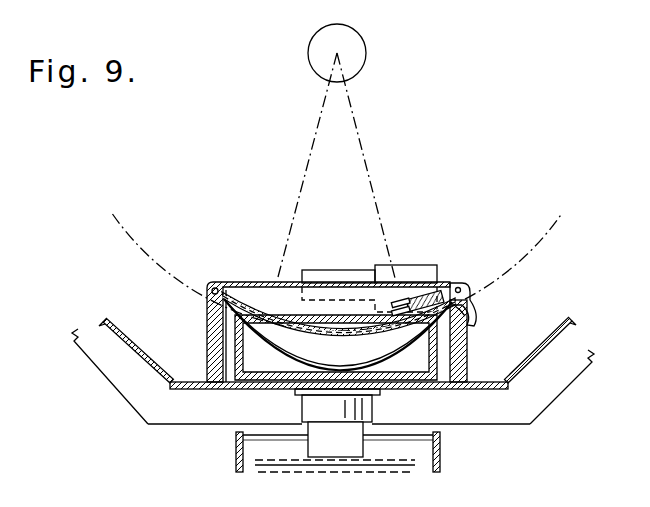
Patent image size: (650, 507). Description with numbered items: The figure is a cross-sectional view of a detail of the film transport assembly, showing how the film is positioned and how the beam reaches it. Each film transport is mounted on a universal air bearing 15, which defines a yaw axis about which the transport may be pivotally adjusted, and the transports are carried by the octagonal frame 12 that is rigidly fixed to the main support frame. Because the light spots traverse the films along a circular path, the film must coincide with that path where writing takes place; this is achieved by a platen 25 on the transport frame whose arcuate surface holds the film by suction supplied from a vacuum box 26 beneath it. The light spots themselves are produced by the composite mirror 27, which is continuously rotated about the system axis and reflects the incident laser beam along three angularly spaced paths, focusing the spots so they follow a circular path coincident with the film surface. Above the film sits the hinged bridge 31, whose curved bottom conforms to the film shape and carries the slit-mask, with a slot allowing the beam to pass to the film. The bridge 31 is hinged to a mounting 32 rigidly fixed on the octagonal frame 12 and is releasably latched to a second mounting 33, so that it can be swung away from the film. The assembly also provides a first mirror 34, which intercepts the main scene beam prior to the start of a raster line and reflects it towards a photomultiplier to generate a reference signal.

The octagonal frame 12 is at (100, 373).
The universal air bearing 15 is at (338, 430).
The platen 25 is at (428, 344).
The vacuum box 26 is at (466, 381).
The composite mirror 27 is at (363, 44).
The hinged bridge 31 is at (247, 283).
The mounting 32 is at (207, 356).
The second mounting 33 is at (469, 332).
The first mirror 34 is at (436, 289).